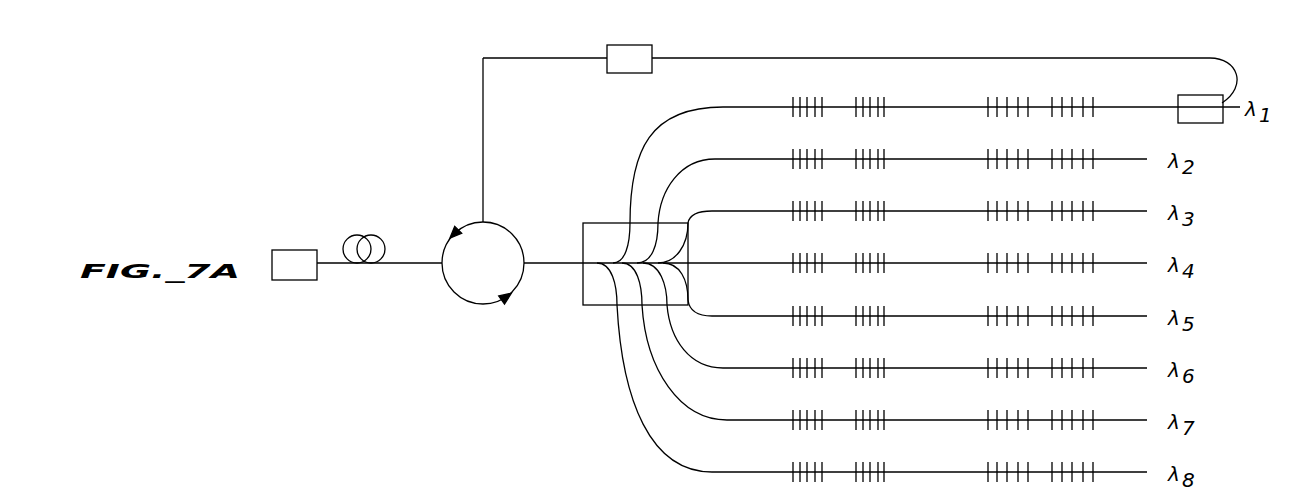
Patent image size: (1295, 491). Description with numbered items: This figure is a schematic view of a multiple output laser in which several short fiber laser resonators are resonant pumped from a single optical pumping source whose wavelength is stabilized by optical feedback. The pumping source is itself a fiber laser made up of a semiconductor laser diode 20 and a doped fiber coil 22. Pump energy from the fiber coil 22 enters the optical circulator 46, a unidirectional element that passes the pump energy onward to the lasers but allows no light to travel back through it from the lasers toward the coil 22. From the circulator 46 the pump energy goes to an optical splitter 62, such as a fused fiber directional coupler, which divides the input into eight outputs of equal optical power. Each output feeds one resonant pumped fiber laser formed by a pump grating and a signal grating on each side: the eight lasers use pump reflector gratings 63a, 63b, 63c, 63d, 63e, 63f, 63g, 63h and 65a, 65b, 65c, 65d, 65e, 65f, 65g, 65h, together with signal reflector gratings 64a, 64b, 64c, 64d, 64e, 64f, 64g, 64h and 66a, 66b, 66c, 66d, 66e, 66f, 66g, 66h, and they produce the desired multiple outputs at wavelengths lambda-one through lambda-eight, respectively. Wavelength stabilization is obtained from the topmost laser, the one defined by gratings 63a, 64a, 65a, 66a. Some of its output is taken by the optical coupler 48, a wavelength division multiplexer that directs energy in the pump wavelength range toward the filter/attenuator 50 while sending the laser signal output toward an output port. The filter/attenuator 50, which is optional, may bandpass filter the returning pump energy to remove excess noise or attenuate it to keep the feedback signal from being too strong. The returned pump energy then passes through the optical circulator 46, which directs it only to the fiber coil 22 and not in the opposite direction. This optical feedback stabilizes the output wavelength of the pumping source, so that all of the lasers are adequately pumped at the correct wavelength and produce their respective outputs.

The semiconductor laser diode 20 is at (295, 281).
The doped fiber coil 22 is at (370, 236).
The optical circulator 46 is at (456, 296).
The optical coupler 48 is at (1203, 124).
The filter/attenuator 50 is at (627, 74).
The optical splitter 62 is at (605, 306).
The pump reflector grating 63a is at (800, 97).
The pump reflector grating 63b is at (800, 149).
The pump reflector grating 63c is at (800, 201).
The pump reflector grating 63d is at (800, 253).
The pump reflector grating 63e is at (800, 306).
The pump reflector grating 63f is at (800, 358).
The pump reflector grating 63g is at (800, 410).
The pump reflector grating 63h is at (800, 462).
The signal reflector grating 64a is at (884, 97).
The signal reflector grating 64b is at (884, 149).
The signal reflector grating 64c is at (884, 201).
The signal reflector grating 64d is at (884, 253).
The signal reflector grating 64e is at (884, 306).
The signal reflector grating 64f is at (884, 358).
The signal reflector grating 64g is at (884, 410).
The signal reflector grating 64h is at (884, 462).
The pump reflector grating 65a is at (1073, 97).
The pump reflector grating 65b is at (1073, 149).
The pump reflector grating 65c is at (1073, 201).
The pump reflector grating 65d is at (1073, 253).
The pump reflector grating 65e is at (1073, 306).
The pump reflector grating 65f is at (1073, 358).
The pump reflector grating 65g is at (1073, 410).
The pump reflector grating 65h is at (1073, 462).
The signal reflector grating 66a is at (1008, 97).
The signal reflector grating 66b is at (1008, 149).
The signal reflector grating 66c is at (1008, 201).
The signal reflector grating 66d is at (1008, 253).
The signal reflector grating 66e is at (1008, 306).
The signal reflector grating 66f is at (1008, 358).
The signal reflector grating 66g is at (1008, 410).
The signal reflector grating 66h is at (1008, 462).